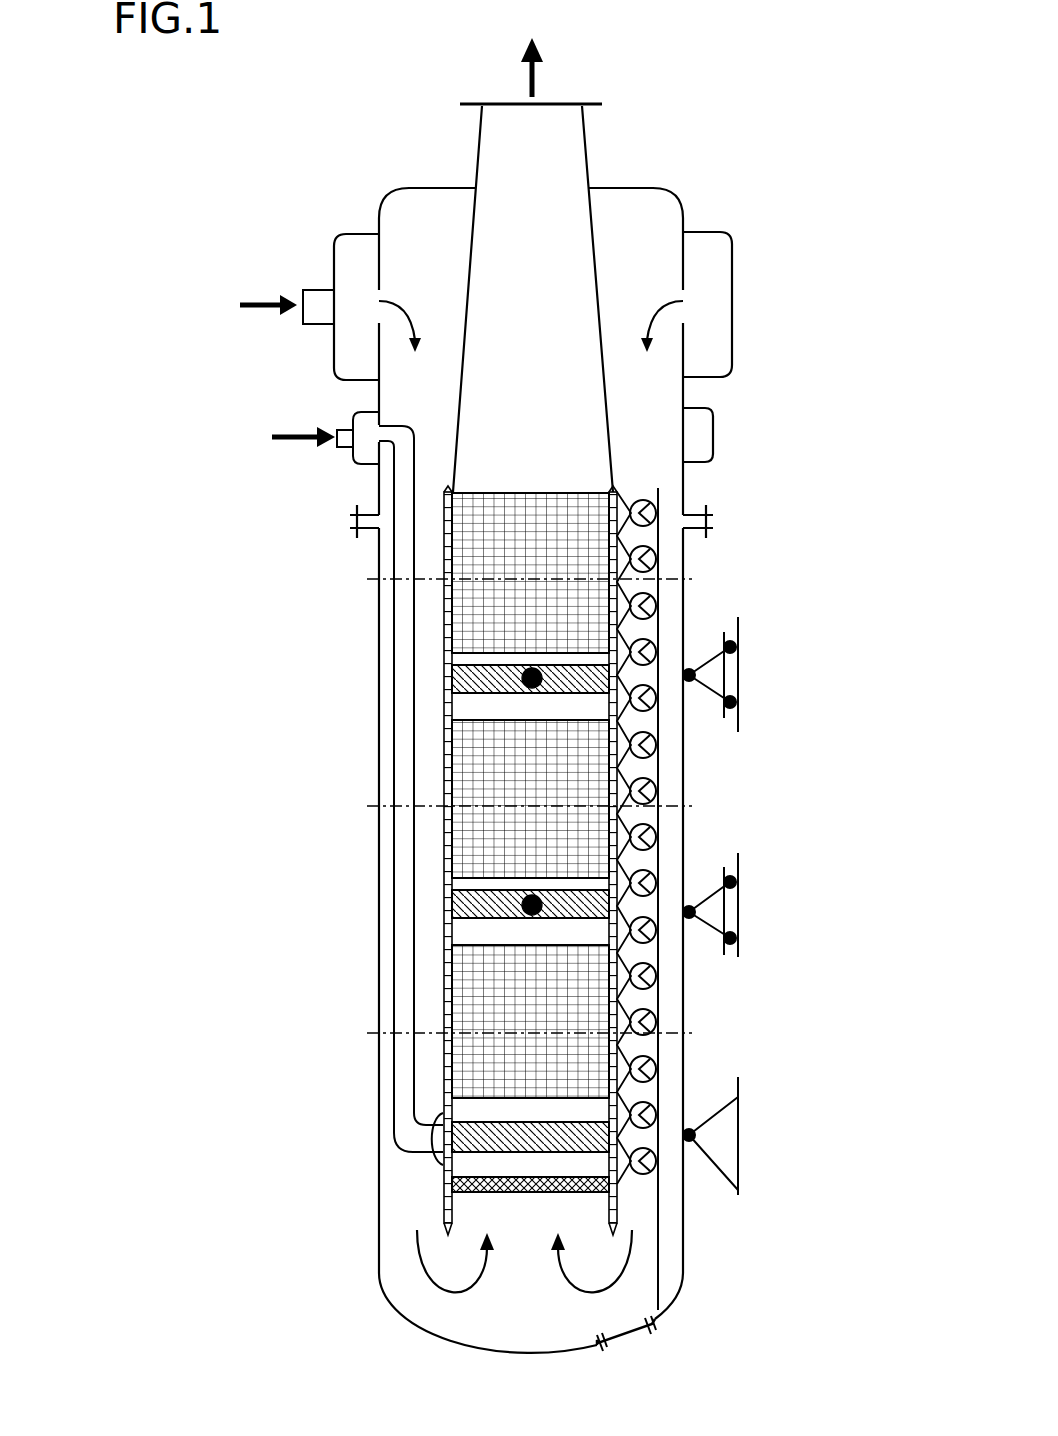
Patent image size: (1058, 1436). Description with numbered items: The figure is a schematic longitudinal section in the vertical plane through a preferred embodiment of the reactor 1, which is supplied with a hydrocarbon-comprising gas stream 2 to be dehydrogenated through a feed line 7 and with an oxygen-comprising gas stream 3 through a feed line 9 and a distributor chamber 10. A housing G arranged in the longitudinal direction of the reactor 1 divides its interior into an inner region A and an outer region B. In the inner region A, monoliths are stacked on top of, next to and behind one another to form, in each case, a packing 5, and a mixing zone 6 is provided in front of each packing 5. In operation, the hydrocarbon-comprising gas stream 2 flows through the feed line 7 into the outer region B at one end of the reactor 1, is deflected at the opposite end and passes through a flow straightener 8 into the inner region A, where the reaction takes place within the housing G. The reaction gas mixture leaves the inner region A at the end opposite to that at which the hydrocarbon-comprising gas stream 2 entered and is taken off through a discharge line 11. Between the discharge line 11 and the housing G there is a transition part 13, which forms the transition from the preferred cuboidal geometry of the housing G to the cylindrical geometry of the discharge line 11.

The reactor 1 is at (312, 657).
The hydrocarbon-comprising gas stream 2 is at (253, 297).
The oxygen-comprising gas stream 3 is at (282, 430).
The packing 5 is at (474, 606).
The mixing zone 6 is at (593, 677).
The feed line 7 is at (312, 305).
The flow straightener 8 is at (603, 1187).
The feed line 9 is at (408, 1130).
The distributor chamber 10 is at (545, 685).
The discharge line 11 is at (536, 73).
The transition part 13 is at (578, 407).
The outer region B is at (435, 210).
The housing G is at (612, 608).
The inner region A is at (557, 713).